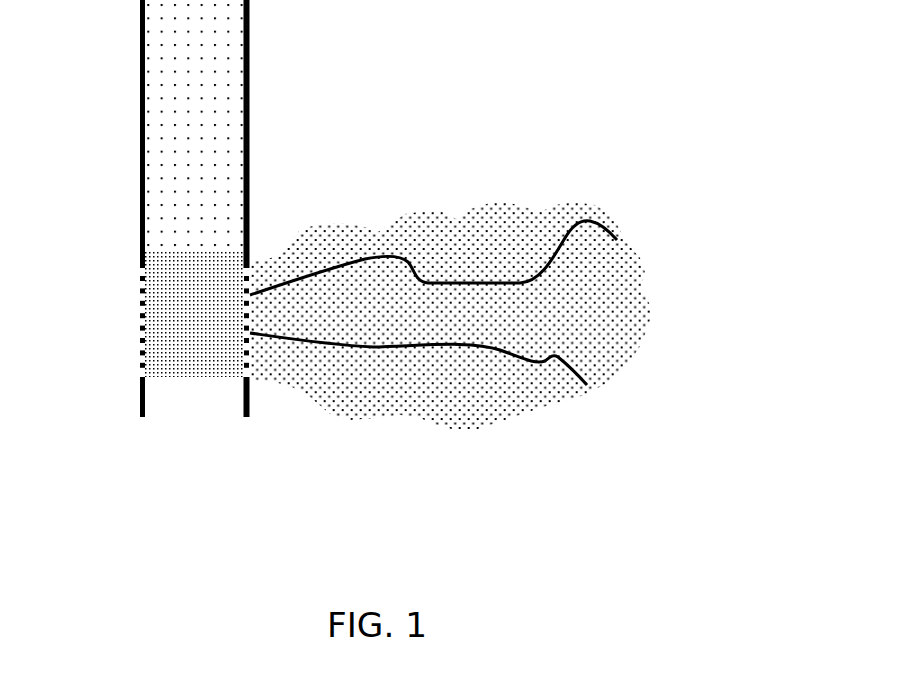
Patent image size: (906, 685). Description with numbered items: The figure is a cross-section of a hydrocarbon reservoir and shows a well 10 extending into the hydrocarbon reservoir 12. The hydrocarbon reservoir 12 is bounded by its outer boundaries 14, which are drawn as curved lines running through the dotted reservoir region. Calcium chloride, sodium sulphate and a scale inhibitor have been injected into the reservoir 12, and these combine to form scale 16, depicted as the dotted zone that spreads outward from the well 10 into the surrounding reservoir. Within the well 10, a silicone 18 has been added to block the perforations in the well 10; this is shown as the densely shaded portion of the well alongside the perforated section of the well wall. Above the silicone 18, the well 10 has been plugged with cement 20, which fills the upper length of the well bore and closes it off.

The well 10 is at (140, 182).
The hydrocarbon reservoir 12 is at (502, 359).
The outer boundaries 14 is at (578, 218).
The scale 16 is at (455, 407).
The silicone 18 is at (197, 377).
The cement 20 is at (213, 82).